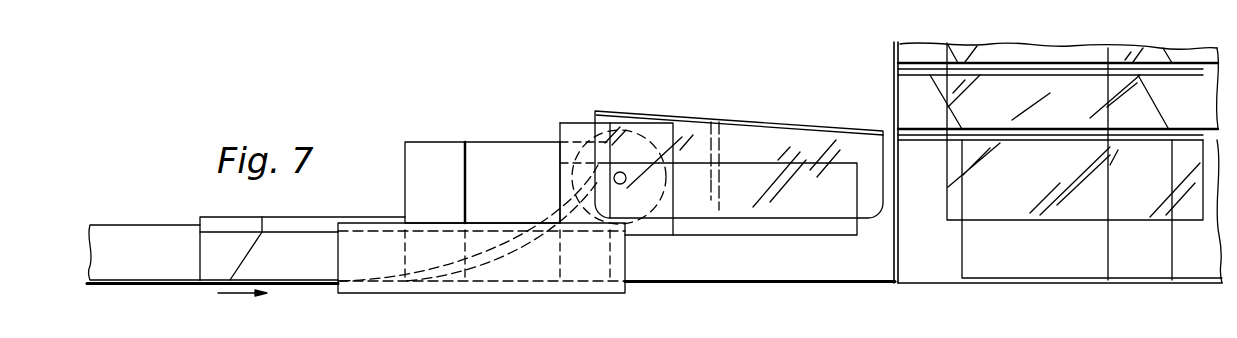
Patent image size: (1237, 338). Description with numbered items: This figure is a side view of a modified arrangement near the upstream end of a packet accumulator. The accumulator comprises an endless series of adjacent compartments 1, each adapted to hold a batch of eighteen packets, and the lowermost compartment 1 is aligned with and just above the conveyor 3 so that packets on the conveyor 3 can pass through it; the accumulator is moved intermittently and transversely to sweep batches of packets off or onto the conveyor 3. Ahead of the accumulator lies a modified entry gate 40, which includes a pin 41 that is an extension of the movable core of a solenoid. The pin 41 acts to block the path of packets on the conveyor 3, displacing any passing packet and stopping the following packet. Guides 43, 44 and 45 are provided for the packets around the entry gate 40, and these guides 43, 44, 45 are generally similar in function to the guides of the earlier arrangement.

The compartment 1 is at (957, 215).
The conveyor 3 is at (182, 283).
The entry gate 40 is at (547, 138).
The pin 41 is at (624, 173).
The guide 43 is at (547, 203).
The guide 44 is at (430, 223).
The guide 45 is at (807, 138).